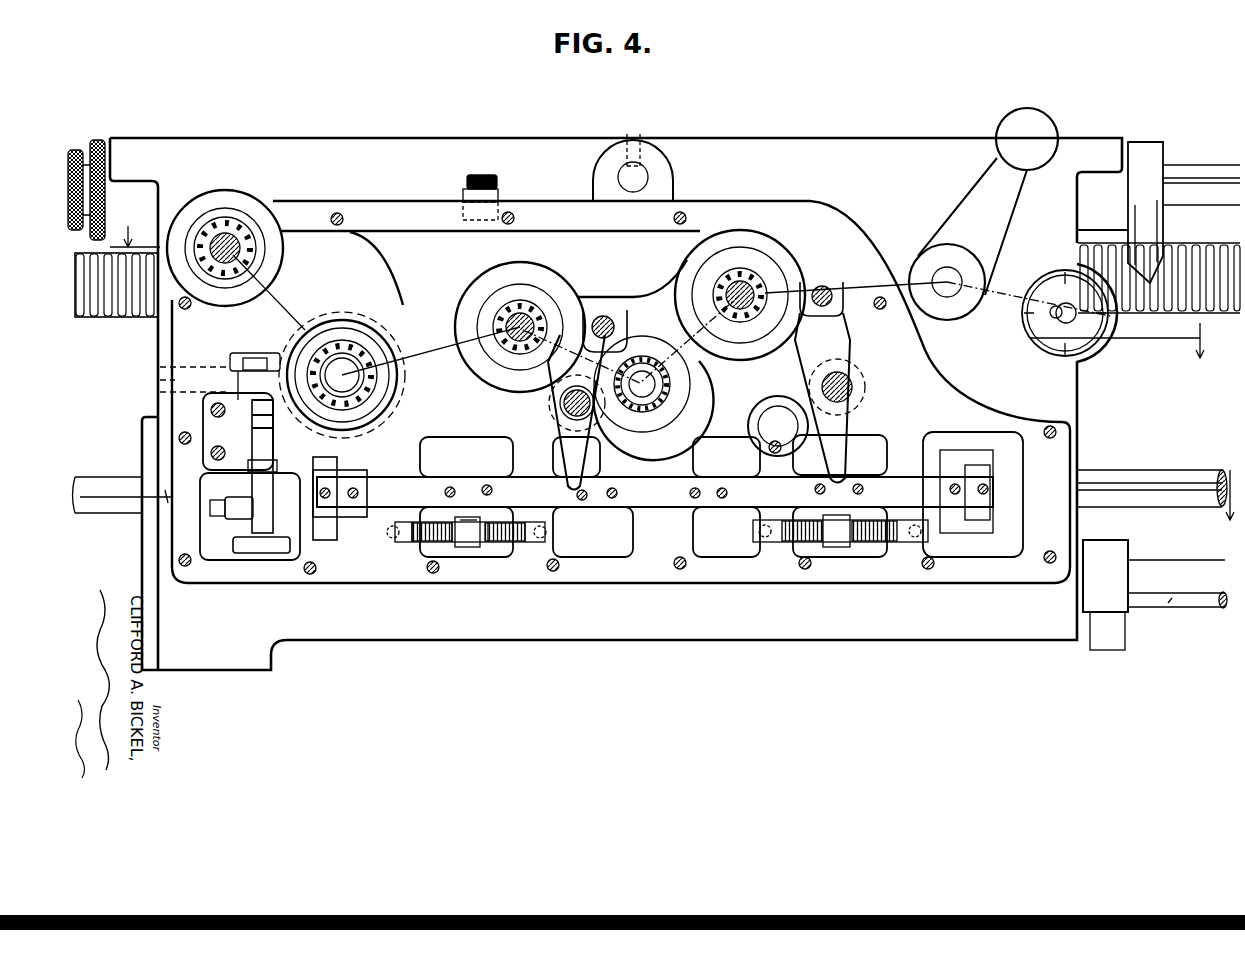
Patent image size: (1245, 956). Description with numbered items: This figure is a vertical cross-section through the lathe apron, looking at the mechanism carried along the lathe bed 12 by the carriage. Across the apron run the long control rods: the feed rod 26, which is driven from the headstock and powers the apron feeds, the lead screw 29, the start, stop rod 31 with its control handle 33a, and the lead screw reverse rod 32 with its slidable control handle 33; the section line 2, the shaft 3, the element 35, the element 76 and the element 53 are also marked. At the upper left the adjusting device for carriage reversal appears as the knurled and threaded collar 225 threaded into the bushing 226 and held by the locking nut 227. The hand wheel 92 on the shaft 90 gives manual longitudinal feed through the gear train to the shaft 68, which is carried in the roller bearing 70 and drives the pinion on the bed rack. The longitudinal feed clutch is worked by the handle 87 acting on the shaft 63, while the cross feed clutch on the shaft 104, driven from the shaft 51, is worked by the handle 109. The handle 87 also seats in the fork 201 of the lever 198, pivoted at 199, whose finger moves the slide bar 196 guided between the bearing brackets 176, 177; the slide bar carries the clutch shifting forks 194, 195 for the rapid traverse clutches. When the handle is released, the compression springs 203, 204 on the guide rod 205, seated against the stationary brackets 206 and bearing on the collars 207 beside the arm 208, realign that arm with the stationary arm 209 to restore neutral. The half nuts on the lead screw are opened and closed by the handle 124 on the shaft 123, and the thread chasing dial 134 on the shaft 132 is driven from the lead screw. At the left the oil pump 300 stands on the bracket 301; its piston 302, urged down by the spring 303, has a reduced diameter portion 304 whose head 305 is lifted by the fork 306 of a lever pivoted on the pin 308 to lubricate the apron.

The lathe bed 12 is at (782, 152).
The knurled and threaded collar 225 is at (78, 150).
The locking nut 227 is at (104, 145).
The bushing 226 is at (136, 214).
The lead screw 29 is at (128, 318).
The section line 2 is at (1122, 340).
The lead screw reverse rod 32 is at (1196, 170).
The control handle 33 is at (1147, 245).
The handle 124 is at (1033, 121).
The shaft 123 is at (951, 274).
The thread chasing dial 134 is at (1043, 303).
The shaft 132 is at (1055, 322).
The feed rod 26 is at (1160, 470).
The shaft 3 is at (654, 495).
The control handle 33a is at (1112, 575).
The start, stop rod 31 is at (1203, 549).
The bushing 35 is at (1172, 600).
The hand wheel 92 is at (226, 228).
The shaft 90 is at (246, 246).
The shaft 68 is at (375, 332).
The reduced diameter portion 304 is at (300, 368).
The roller bearing 70 is at (431, 351).
The fork 306 is at (240, 356).
The head 305 is at (265, 357).
The pin 308 is at (160, 381).
The piston 302 is at (252, 431).
The spring 303 is at (278, 413).
The bracket 301 is at (280, 462).
The oil pump 300 is at (273, 511).
The clutch shifting fork 194 is at (345, 518).
The slide bar 196 is at (536, 496).
The bearing bracket 176 is at (404, 463).
The bearing bracket 177 is at (540, 466).
The clutch shifting fork 195 is at (605, 530).
The compression spring 203 is at (432, 545).
The compression spring 204 is at (507, 545).
The stationary arm 209 is at (470, 548).
The collar 207 is at (452, 546).
The guide rod 205 is at (430, 546).
The arm 208 is at (468, 505).
The stationary bracket 206 is at (395, 545).
The ball bearing 76 is at (520, 320).
The shaft 63 is at (524, 324).
The handle 87 is at (604, 316).
The fork 201 is at (618, 332).
The pivot 199 is at (563, 406).
The lever 198 is at (548, 386).
The bearing 53 is at (648, 362).
The shaft 51 is at (668, 370).
The shaft 104 is at (752, 290).
The handle 109 is at (822, 289).